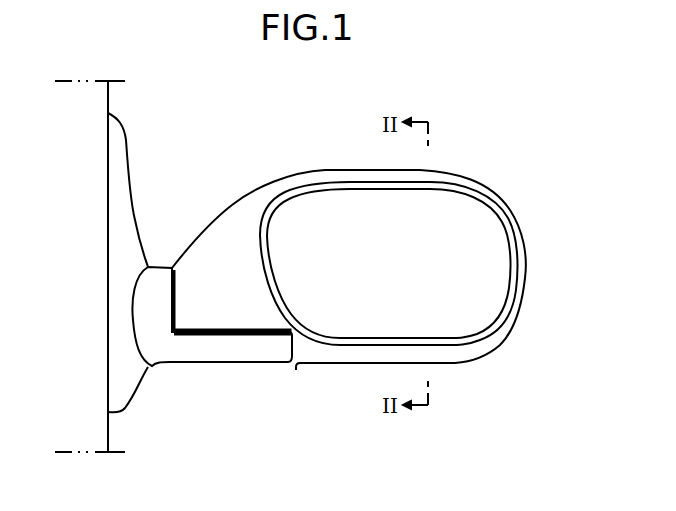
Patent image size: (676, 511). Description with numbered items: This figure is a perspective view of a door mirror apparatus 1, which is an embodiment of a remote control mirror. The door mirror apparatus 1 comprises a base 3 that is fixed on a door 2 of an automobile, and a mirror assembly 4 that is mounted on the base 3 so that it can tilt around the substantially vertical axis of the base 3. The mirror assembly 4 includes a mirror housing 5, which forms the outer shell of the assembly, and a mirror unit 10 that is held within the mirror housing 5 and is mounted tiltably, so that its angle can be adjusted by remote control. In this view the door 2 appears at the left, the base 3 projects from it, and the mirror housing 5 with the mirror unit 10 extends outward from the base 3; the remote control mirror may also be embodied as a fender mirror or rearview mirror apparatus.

The door mirror apparatus 1 is at (275, 126).
The door 2 is at (100, 104).
The base 3 is at (225, 364).
The mirror assembly 4 is at (334, 170).
The mirror housing 5 is at (458, 188).
The mirror unit 10 is at (467, 240).